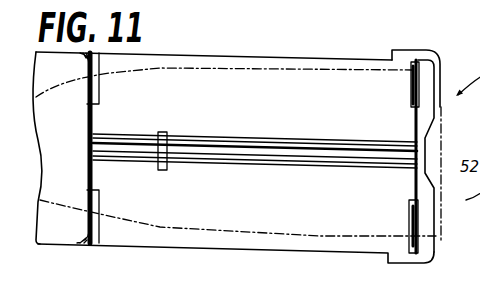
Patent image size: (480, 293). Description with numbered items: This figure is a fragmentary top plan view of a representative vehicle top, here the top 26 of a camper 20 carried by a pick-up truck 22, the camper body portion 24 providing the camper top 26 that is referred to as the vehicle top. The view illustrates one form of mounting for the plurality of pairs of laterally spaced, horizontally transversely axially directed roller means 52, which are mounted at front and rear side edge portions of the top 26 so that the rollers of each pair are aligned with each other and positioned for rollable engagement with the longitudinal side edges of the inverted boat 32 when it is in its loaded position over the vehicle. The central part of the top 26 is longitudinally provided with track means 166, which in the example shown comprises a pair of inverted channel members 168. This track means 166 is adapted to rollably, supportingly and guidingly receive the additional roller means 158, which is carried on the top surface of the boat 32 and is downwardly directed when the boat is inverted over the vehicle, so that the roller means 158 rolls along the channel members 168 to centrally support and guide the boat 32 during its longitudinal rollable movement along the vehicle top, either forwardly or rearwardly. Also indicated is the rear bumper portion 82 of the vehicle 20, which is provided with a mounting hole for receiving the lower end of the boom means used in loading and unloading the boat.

The camper 20 is at (380, 25).
The pick-up truck 22 is at (57, 148).
The camper body portion 24 is at (293, 14).
The camper top 26 is at (257, 222).
The boat 32 is at (416, 60).
The roller means 52 is at (106, 79).
The rear bumper portion 82 is at (437, 57).
The roller means 158 is at (169, 135).
The track means 166 is at (251, 166).
The inverted channel members 168 is at (330, 155).